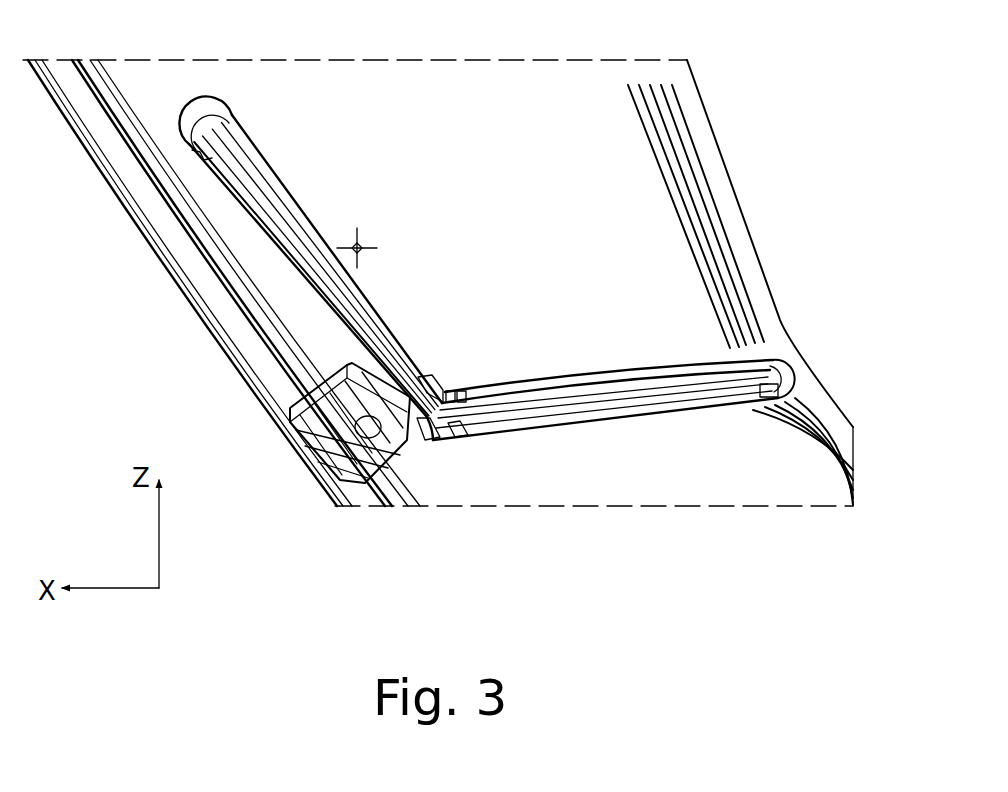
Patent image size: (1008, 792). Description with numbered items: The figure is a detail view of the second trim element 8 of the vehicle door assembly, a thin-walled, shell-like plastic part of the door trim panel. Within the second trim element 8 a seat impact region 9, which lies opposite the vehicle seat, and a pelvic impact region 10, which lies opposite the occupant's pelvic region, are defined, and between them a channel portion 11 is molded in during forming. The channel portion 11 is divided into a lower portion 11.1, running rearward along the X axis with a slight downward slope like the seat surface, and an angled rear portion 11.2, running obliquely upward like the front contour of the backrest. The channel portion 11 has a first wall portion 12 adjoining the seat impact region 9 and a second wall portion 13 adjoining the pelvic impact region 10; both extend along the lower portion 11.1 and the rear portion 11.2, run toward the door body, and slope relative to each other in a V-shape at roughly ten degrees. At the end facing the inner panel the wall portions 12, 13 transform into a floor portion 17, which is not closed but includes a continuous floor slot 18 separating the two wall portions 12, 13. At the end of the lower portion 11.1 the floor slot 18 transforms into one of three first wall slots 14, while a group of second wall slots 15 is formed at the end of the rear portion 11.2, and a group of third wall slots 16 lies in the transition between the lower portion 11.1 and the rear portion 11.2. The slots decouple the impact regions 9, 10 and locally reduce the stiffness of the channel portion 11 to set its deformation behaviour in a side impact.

The second trim element 8 is at (460, 170).
The seat impact region 9 is at (674, 452).
The pelvic impact region 10 is at (558, 200).
The channel portion 11 is at (477, 294).
The lower portion 11.1 is at (668, 357).
The rear portion 11.2 is at (246, 225).
The first wall portion 12 is at (299, 284).
The second wall portion 13 is at (263, 188).
The first wall slot 14 is at (757, 351).
The second wall slot 15 is at (204, 104).
The third wall slot 16 is at (387, 398).
The floor portion 17 is at (360, 342).
The floor slot 18 is at (356, 296).